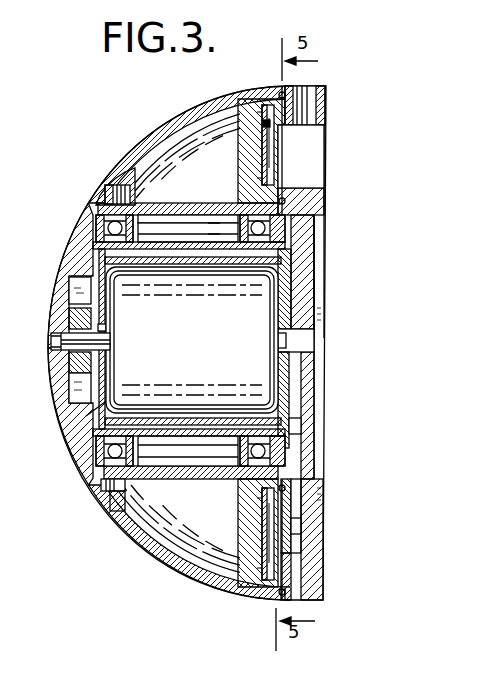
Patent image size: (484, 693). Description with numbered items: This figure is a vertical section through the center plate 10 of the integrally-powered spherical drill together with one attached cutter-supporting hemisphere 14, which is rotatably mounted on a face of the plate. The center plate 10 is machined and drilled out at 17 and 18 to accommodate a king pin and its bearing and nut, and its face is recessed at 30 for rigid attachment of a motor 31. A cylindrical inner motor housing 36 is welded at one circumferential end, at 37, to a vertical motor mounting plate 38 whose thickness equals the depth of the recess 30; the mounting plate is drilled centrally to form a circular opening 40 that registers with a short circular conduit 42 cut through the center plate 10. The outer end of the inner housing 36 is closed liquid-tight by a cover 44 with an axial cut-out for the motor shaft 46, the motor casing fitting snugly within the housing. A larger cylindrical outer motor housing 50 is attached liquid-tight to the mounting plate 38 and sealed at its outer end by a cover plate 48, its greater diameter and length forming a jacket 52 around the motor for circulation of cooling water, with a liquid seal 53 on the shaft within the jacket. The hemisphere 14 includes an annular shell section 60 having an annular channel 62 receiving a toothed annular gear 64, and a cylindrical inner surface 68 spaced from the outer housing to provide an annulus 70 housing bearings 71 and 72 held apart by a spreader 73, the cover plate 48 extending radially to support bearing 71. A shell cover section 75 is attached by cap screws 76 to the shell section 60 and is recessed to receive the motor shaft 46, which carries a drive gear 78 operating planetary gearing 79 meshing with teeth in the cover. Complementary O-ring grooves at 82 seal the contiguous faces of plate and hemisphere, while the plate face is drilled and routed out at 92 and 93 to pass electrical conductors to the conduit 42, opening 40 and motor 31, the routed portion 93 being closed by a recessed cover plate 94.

The center plate 10 is at (320, 297).
The cutter-supporting hemisphere 14 is at (129, 138).
The machined and drilled-out portion 17 is at (312, 158).
The machined and drilled-out portion 18 is at (300, 88).
The recess 30 is at (312, 228).
The motor 31 is at (58, 416).
The inner motor housing 36 is at (180, 262).
The weld 37 is at (258, 272).
The motor mounting plate 38 is at (274, 356).
The circular opening 40 is at (270, 334).
The circular conduit 42 is at (307, 332).
The cover 44 is at (97, 292).
The motor shaft 46 is at (56, 341).
The cover plate 48 is at (92, 364).
The outer motor housing 50 is at (162, 432).
The jacket 52 is at (198, 418).
The liquid seal 53 is at (98, 320).
The annular shell section 60 is at (141, 538).
The annular channel 62 is at (261, 116).
The annular gear 64 is at (265, 139).
The cylindrical inner surface 68 is at (160, 209).
The annulus 70 is at (188, 214).
The bearing 71 is at (86, 208).
The bearing 72 is at (232, 198).
The spreader 73 is at (206, 218).
The shell cover section 75 is at (58, 246).
The cap screws 76 is at (97, 186).
The drive gear 78 is at (60, 312).
The planetary gearing 79 is at (60, 282).
The O-ring grooves 82 is at (271, 85).
The drilled passage 92 is at (295, 560).
The routed-out portion 93 is at (290, 490).
The cover plate 94 is at (284, 418).